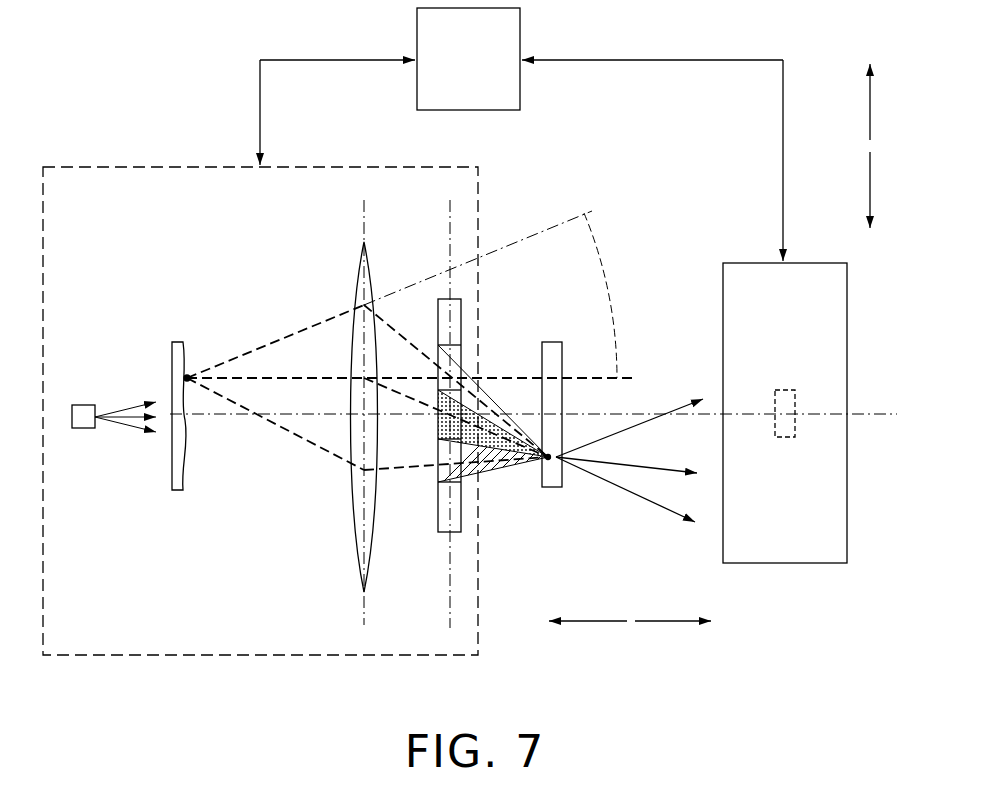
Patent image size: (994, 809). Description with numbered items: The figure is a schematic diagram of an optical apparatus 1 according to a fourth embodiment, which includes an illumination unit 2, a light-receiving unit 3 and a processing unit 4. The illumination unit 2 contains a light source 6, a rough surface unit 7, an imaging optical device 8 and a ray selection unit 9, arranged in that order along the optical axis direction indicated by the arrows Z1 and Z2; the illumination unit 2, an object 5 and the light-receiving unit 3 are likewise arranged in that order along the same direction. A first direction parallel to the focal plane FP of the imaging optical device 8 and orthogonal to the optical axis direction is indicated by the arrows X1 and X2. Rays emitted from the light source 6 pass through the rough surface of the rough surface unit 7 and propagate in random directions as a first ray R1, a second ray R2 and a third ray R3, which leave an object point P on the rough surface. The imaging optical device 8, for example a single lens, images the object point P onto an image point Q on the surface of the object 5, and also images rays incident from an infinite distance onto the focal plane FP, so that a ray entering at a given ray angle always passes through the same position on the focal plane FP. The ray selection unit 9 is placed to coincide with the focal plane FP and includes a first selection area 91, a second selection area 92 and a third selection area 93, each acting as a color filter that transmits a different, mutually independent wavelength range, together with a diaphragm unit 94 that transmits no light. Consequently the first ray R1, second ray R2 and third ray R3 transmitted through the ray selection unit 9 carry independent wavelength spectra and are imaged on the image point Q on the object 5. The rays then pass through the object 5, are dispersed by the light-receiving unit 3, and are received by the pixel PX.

The optical apparatus 1 is at (74, 67).
The illumination unit 2 is at (80, 165).
The light-receiving unit 3 is at (785, 386).
The processing unit 4 is at (521, 17).
The object 5 is at (562, 356).
The light source 6 is at (83, 405).
The rough surface unit 7 is at (199, 388).
The imaging optical device 8 is at (368, 250).
The ray selection unit 9 is at (488, 384).
The first selection area 91 is at (456, 356).
The second selection area 92 is at (437, 428).
The third selection area 93 is at (470, 478).
The diaphragm unit 94 is at (455, 312).
The object point P is at (190, 384).
The image point Q is at (550, 462).
The first ray R1 is at (257, 350).
The second ray R2 is at (263, 381).
The third ray R3 is at (330, 455).
The focal plane FP is at (452, 570).
The pixel PX is at (781, 440).
The first direction arrow X1 is at (886, 102).
The first direction arrow X2 is at (886, 190).
The optical axis direction arrow Z1 is at (673, 640).
The optical axis direction arrow Z2 is at (588, 640).